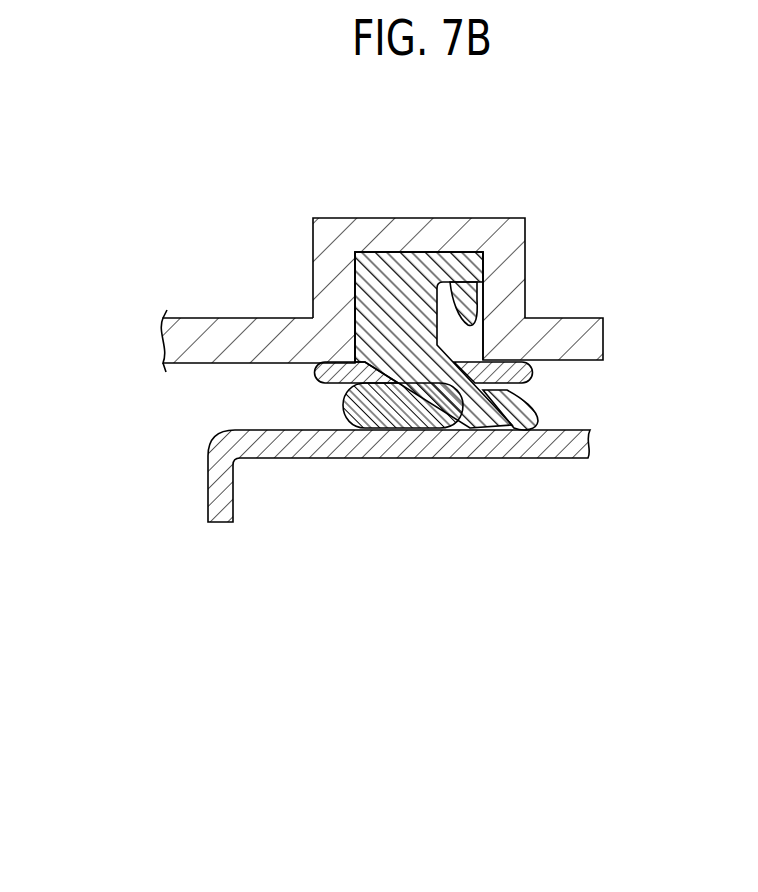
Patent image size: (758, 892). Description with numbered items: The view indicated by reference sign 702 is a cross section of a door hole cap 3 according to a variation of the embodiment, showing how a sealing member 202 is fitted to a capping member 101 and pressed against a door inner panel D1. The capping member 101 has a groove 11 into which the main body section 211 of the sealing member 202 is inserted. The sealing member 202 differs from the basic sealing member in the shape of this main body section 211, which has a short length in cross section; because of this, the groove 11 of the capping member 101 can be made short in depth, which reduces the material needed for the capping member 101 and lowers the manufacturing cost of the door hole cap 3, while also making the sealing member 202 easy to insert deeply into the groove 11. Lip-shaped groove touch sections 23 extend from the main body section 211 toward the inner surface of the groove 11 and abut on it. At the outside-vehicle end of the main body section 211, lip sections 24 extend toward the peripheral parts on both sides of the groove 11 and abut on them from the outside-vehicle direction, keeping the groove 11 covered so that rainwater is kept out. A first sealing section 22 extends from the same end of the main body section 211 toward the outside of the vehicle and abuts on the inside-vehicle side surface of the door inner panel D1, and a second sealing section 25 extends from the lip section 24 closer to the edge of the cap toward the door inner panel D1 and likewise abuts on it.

The cross-sectional view of door hole cap 702 is at (150, 153).
The groove 11 is at (400, 232).
The capping member 101 is at (200, 335).
The main body section 211 is at (390, 272).
The door hole cap 3 is at (660, 379).
The sealing member 202 is at (428, 275).
The groove touch sections 23 is at (462, 283).
The lip sections 24 is at (312, 378).
The second sealing section 25 is at (535, 412).
The first sealing section 22 is at (478, 428).
The door inner panel D1 is at (298, 450).